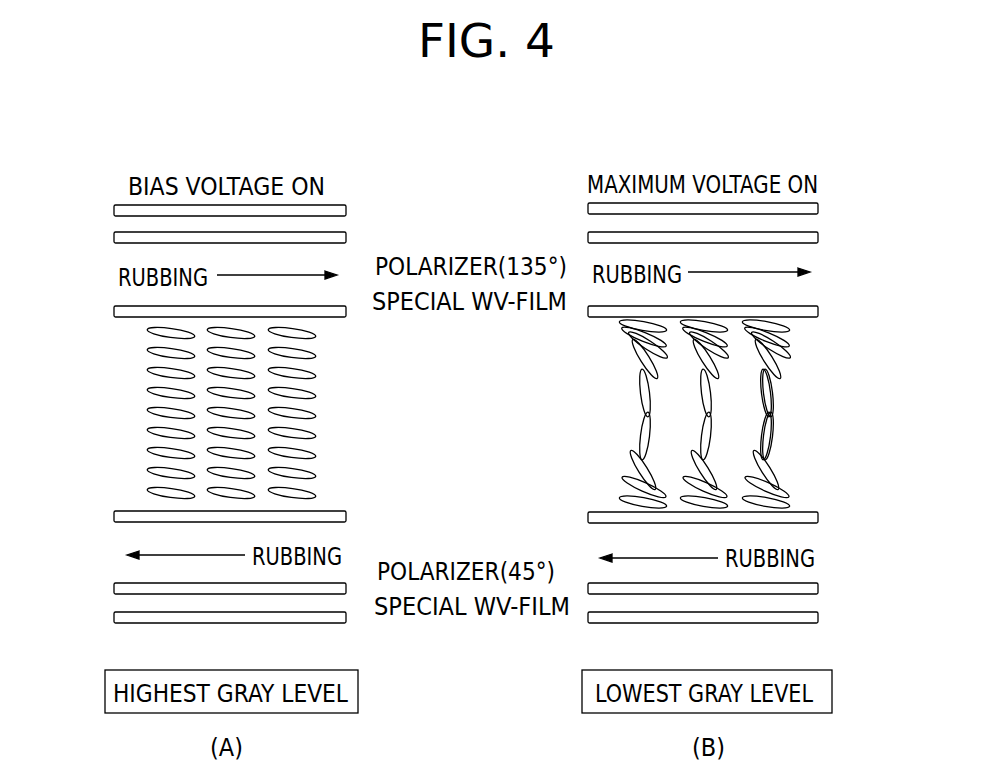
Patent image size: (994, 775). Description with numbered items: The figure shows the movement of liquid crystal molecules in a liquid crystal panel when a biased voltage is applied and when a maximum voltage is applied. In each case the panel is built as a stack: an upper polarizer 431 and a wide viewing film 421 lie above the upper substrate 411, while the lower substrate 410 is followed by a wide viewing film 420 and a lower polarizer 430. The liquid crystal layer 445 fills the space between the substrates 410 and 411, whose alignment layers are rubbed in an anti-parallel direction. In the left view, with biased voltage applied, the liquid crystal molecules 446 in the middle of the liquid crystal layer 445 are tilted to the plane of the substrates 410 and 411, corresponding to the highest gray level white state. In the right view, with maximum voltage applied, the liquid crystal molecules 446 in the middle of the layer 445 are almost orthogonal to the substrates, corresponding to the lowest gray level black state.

The polarizer 431 is at (114, 209).
The wide viewing film 421 is at (114, 236).
The upper substrate 411 is at (114, 311).
The liquid crystal layer 445 is at (134, 391).
The liquid crystal molecules 446 is at (772, 398).
The lower substrate 410 is at (114, 515).
The wide viewing film 420 is at (114, 587).
The polarizer 430 is at (114, 616).